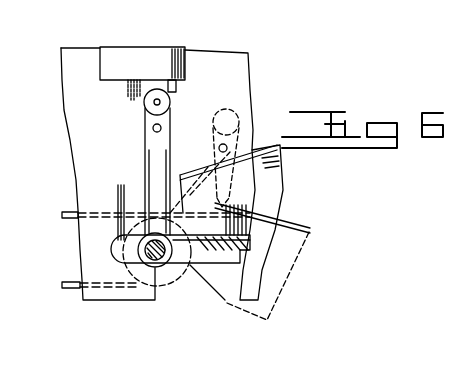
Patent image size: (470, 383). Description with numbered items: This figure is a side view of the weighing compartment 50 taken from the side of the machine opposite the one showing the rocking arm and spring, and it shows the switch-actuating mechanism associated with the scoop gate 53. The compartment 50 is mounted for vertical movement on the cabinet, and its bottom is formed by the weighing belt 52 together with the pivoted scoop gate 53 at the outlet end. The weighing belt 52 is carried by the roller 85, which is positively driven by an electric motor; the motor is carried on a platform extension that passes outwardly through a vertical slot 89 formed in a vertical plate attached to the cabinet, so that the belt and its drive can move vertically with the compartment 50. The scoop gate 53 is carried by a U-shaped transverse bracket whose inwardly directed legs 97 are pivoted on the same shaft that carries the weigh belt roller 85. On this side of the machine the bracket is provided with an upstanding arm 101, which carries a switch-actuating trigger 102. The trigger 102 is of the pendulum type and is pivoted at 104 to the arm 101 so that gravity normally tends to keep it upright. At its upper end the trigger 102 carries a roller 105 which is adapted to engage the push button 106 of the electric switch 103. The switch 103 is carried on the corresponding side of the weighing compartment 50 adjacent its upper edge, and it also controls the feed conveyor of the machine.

The weighing compartment 50 is at (52, 68).
The weighing belt 52 is at (68, 212).
The scoop gate 53 is at (285, 185).
The roller 85 is at (162, 280).
The vertical slot 89 is at (233, 278).
The inwardly directed legs 97 is at (202, 272).
The upstanding arm 101 is at (156, 162).
The switch-actuating trigger 102 is at (144, 116).
The electric switch 103 is at (120, 57).
The pivot 104 is at (161, 128).
The roller 105 is at (140, 90).
The push button 106 is at (178, 90).